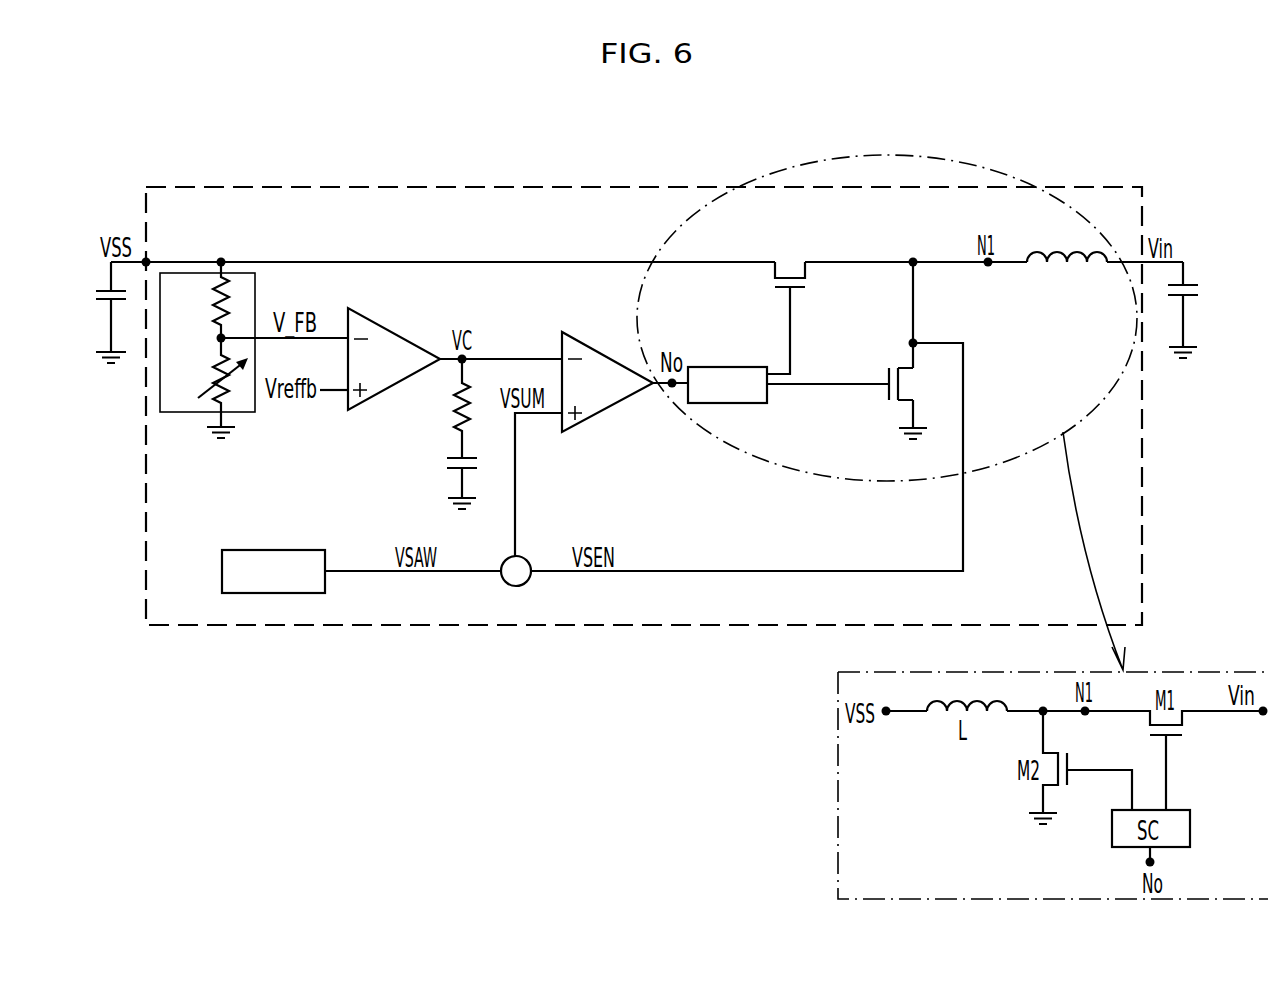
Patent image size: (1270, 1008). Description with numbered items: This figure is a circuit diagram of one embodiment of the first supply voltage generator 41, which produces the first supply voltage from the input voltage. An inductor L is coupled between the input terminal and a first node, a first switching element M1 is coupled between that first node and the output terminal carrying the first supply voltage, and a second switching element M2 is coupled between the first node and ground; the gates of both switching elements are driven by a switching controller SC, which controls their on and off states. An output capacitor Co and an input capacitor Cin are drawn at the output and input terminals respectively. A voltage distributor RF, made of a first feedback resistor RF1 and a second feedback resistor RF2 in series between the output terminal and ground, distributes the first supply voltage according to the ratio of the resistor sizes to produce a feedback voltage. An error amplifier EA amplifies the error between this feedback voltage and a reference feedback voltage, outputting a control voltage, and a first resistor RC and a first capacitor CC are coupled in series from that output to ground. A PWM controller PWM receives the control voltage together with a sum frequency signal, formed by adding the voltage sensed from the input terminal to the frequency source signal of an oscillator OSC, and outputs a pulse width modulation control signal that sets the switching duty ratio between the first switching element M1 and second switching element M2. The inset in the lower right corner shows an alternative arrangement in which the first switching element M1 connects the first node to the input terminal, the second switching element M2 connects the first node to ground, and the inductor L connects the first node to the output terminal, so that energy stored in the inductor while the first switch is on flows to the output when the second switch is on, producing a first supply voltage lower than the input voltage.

The first supply voltage generator 41 is at (430, 187).
The voltage distributor RF is at (243, 273).
The first feedback resistor RF1 is at (202, 300).
The second feedback resistor RF2 is at (211, 388).
The output capacitor Co is at (99, 312).
The input capacitor Cin is at (1200, 310).
The error amplifier EA is at (394, 359).
The PWM controller PWM is at (607, 382).
The first resistor RC is at (447, 408).
The first capacitor CC is at (449, 479).
The switching controller SC is at (727, 385).
The first switching element M1 is at (790, 260).
The second switching element M2 is at (912, 403).
The inductor L is at (1067, 276).
The oscillator OSC is at (273, 571).